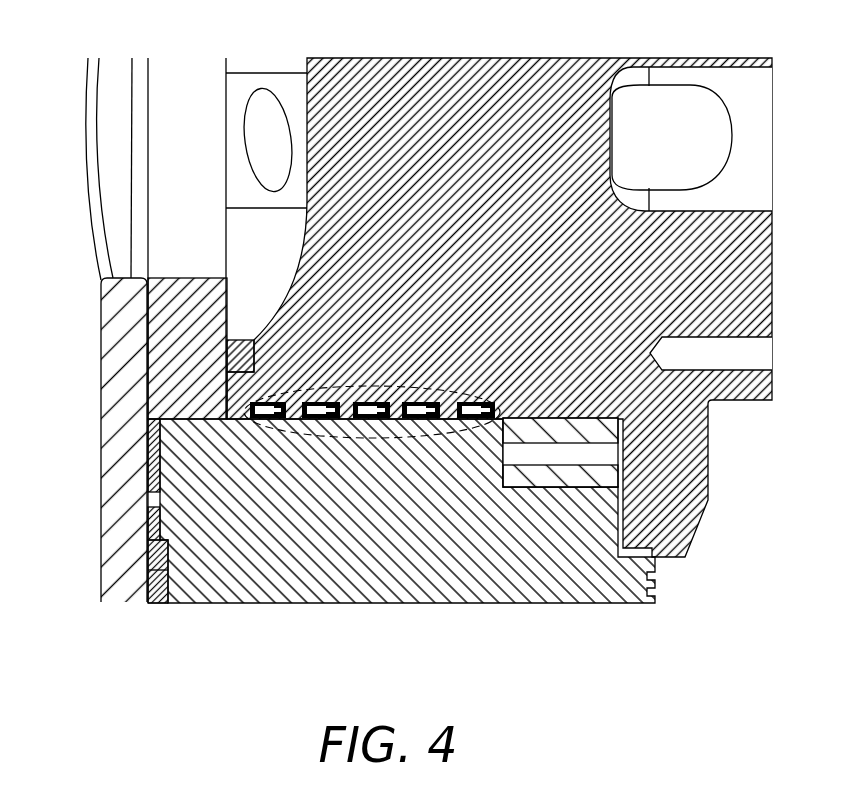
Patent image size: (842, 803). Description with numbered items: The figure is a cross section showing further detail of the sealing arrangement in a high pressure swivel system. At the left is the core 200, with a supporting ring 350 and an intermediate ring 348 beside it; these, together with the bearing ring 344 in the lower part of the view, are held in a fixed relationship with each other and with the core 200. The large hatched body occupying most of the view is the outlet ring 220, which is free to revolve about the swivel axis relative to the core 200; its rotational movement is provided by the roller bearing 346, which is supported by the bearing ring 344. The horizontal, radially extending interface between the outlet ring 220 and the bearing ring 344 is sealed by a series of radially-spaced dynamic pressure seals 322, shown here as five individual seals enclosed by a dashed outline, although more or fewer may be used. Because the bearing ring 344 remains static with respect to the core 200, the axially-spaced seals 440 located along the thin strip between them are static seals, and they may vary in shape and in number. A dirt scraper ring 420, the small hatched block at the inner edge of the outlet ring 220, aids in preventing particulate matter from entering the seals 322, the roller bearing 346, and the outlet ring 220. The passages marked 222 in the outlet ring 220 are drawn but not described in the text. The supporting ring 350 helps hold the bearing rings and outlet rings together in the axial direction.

The core 200 is at (117, 460).
The outlet ring 220 is at (503, 322).
The fluid passage 222 is at (278, 113).
The dynamic pressure seals 322 is at (353, 437).
The bearing ring 344 is at (427, 532).
The roller bearing 346 is at (623, 431).
The intermediate ring 348 is at (205, 353).
The supporting ring 350 is at (44, 360).
The dirt scraper ring 420 is at (236, 340).
The static pressure seals 440 is at (160, 600).